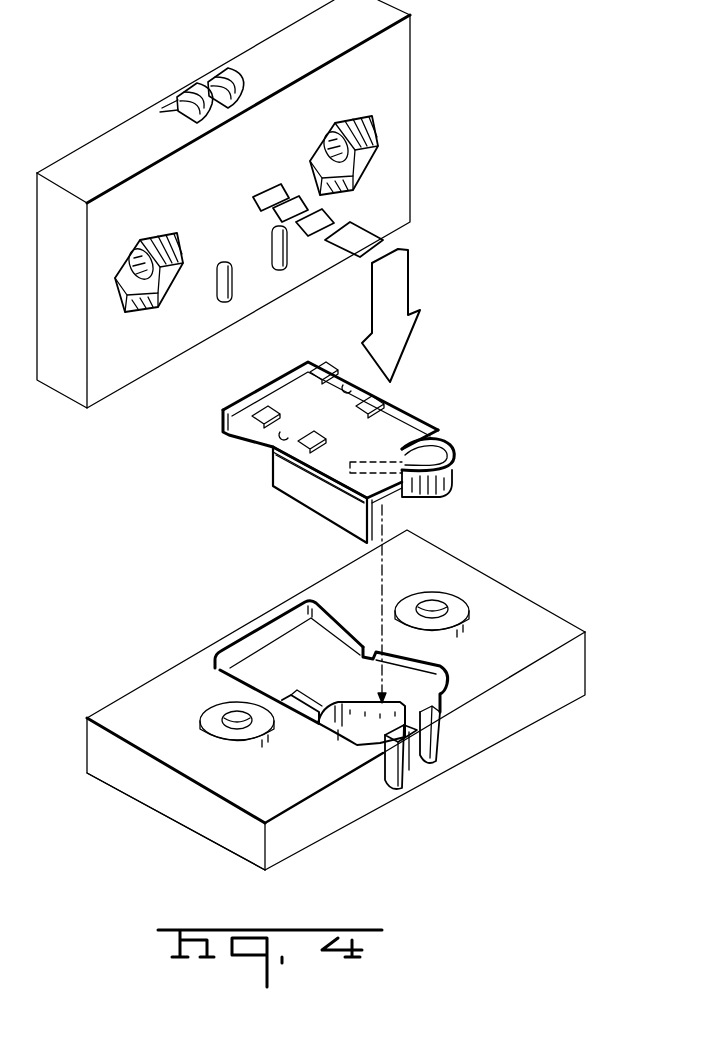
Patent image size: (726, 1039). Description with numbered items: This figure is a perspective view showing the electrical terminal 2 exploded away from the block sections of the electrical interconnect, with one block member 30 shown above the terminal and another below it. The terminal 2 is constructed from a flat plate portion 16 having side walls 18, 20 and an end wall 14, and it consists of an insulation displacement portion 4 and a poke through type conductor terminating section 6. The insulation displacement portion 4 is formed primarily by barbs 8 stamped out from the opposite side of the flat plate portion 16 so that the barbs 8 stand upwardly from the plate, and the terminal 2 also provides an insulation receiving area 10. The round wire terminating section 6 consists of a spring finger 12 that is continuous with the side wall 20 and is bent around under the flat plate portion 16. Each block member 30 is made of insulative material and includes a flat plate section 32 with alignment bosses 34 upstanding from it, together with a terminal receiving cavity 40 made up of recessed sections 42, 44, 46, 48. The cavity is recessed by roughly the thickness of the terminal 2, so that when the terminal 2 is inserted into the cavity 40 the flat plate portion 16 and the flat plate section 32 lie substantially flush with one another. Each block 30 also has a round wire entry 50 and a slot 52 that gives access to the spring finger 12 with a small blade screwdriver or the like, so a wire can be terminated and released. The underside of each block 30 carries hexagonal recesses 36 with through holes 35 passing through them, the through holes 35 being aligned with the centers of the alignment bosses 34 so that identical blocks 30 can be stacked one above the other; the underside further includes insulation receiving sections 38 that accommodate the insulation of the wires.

The terminal 2 is at (330, 439).
The insulation displacement portion 4 is at (243, 445).
The poke through type conductor terminating section 6 is at (460, 443).
The barbs 8 is at (308, 363).
The insulation receiving area 10 is at (357, 406).
The spring finger 12 is at (408, 494).
The end wall 14 is at (221, 427).
The flat plate portion 16 is at (332, 456).
The side wall 18 is at (318, 505).
The side wall 20 is at (428, 460).
The block member 30 is at (434, 131).
The flat plate section 32 is at (233, 782).
The alignment bosses 34 is at (231, 711).
The through holes 35 is at (145, 268).
The hexagonal recesses 36 is at (148, 242).
The insulation receiving sections 38 is at (278, 233).
The terminal receiving cavity 40 is at (280, 655).
The recessed section 42 is at (233, 648).
The recessed section 44 is at (430, 680).
The recessed section 46 is at (302, 714).
The recessed section 48 is at (358, 714).
The round wire entry 50 is at (176, 110).
The slot 52 is at (219, 70).